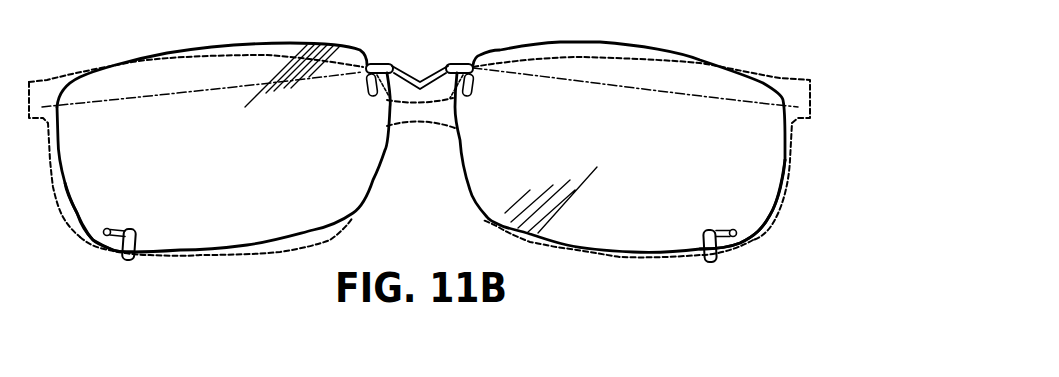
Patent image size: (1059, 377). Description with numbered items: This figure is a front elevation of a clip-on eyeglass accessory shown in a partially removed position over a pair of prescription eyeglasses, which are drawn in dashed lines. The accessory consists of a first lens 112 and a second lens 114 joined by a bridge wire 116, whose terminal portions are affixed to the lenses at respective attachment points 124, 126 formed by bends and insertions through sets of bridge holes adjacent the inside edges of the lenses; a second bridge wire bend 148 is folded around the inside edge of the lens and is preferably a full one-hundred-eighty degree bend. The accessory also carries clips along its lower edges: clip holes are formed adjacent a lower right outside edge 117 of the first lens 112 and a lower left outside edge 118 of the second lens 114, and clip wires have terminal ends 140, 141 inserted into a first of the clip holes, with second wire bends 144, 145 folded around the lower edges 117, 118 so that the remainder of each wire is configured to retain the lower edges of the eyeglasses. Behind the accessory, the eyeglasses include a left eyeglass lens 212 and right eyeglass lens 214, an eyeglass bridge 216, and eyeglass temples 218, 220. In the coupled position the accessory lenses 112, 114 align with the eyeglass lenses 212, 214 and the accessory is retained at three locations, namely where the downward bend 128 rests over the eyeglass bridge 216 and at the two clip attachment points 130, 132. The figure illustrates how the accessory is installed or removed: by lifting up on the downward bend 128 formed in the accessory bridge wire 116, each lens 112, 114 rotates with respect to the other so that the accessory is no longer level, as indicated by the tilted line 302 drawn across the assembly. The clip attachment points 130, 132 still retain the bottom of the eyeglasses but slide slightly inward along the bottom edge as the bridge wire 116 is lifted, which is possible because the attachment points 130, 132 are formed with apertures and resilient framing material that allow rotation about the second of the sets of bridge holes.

The first lens 112 is at (237, 169).
The second lens 114 is at (633, 167).
The bridge wire 116 is at (433, 63).
The lower right outside edge 117 is at (113, 253).
The lower left outside edge 118 is at (723, 250).
The attachment point 124 is at (353, 93).
The attachment point 126 is at (487, 92).
The downward bend 128 is at (420, 88).
The clip attachment point 130 is at (134, 225).
The clip attachment point 132 is at (694, 202).
The terminal end 140 is at (107, 228).
The terminal end 141 is at (733, 229).
The second wire bend 144 is at (143, 262).
The second wire bend 145 is at (703, 240).
The second bridge wire bend 148 is at (388, 63).
The eyeglass lens 212 is at (283, 255).
The eyeglass lens 214 is at (560, 250).
The eyeglass bridge 216 is at (423, 123).
The eyeglass temple 218 is at (46, 78).
The eyeglass temple 220 is at (793, 80).
The line 302 is at (705, 90).